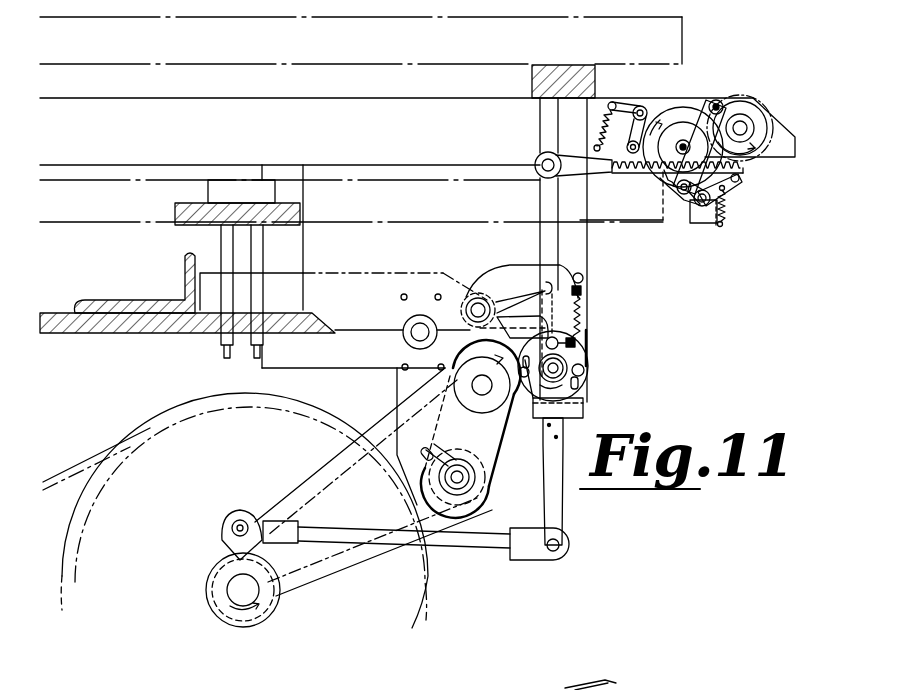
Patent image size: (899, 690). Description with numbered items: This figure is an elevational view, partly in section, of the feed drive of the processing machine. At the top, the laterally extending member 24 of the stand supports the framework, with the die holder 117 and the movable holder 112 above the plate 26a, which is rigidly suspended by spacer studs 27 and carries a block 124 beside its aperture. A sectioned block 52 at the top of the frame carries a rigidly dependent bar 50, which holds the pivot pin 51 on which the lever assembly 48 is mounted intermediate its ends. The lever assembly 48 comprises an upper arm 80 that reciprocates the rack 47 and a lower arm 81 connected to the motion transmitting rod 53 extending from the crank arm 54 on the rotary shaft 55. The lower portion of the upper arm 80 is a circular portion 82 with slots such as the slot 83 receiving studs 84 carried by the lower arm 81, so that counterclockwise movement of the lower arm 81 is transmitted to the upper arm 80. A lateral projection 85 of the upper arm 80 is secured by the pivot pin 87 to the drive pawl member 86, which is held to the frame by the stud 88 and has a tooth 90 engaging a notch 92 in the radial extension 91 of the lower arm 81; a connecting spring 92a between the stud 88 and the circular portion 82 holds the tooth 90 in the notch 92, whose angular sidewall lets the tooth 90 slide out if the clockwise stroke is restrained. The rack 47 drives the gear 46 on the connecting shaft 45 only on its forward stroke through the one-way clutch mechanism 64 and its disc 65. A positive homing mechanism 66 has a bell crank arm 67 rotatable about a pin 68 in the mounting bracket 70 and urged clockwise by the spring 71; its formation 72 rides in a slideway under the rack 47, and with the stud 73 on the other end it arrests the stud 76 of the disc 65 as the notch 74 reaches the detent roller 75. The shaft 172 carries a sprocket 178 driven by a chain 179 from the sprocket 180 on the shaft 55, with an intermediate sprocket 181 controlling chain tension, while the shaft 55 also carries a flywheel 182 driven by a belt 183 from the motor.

The die holder 117 is at (101, 70).
The laterally extending member 24 is at (418, 103).
The mounting block 52 is at (536, 78).
The dependent bar 50 is at (541, 121).
The lever assembly 48 is at (534, 200).
The upper arm 80 is at (548, 208).
The reciprocating rack 47 is at (742, 171).
The disc 65 is at (681, 108).
The one-way clutch mechanism 64 is at (668, 97).
The stud 76 is at (700, 128).
The gear 46 is at (770, 134).
The transverse connecting shaft 45 is at (744, 126).
The notch 74 is at (736, 147).
The detent roller 75 is at (630, 148).
The formation 72 is at (667, 190).
The stud 73 is at (740, 181).
The positive homing mechanism 66 is at (737, 193).
The pin 68 is at (700, 208).
The mounting bracket 70 is at (703, 224).
The bell crank arm 67 is at (724, 212).
The spring 71 is at (719, 226).
The spacer stud 27 is at (305, 251).
The movable holder 112 is at (92, 228).
The plate 26a is at (107, 333).
The block 124 is at (396, 380).
The drive pawl member 86 is at (494, 284).
The lateral projection 85 is at (464, 308).
The pivot pin 87 is at (471, 302).
The notch 92 is at (547, 300).
The tooth 90 is at (546, 283).
The stud 88 is at (583, 276).
The connecting spring 92a is at (582, 295).
The radial extension 91 is at (583, 313).
The stud 84 is at (585, 370).
The slot 83 is at (580, 384).
The circular portion 82 is at (584, 403).
The shaft 172 is at (478, 390).
The sprocket 178 is at (455, 408).
The sprocket 181 is at (452, 443).
The pivot pin 51 is at (533, 414).
The flywheel 182 is at (80, 512).
The belt 183 is at (68, 470).
The chain 179 is at (326, 474).
The rotary shaft 55 is at (234, 598).
The crank arm 54 is at (226, 544).
The sprocket 180 is at (278, 568).
The rod 53 is at (463, 547).
The lower arm 81 is at (563, 520).